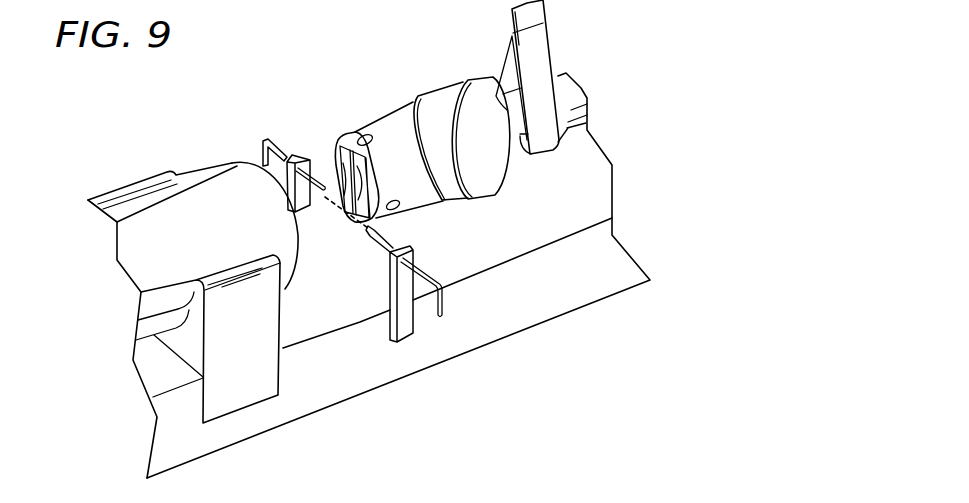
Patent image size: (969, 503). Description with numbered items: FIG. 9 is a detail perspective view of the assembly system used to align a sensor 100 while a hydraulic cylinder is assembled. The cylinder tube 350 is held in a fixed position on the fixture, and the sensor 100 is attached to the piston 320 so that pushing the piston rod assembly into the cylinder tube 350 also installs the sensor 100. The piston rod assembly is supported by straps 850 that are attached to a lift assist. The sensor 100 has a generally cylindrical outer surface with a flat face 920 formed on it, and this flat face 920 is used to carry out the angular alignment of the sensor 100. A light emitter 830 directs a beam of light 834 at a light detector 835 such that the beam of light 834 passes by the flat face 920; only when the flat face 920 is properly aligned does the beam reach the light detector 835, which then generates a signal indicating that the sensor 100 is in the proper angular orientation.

The sensor 100 is at (363, 107).
The piston 320 is at (452, 100).
The cylinder tube 350 is at (213, 205).
The light emitter 830 is at (423, 287).
The beam of light 834 is at (378, 236).
The light detector 835 is at (280, 148).
The straps 850 is at (535, 57).
The flat face 920 is at (393, 202).